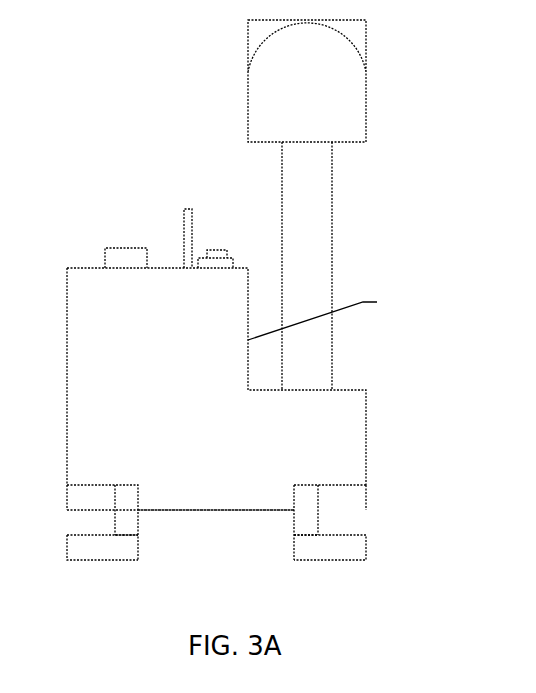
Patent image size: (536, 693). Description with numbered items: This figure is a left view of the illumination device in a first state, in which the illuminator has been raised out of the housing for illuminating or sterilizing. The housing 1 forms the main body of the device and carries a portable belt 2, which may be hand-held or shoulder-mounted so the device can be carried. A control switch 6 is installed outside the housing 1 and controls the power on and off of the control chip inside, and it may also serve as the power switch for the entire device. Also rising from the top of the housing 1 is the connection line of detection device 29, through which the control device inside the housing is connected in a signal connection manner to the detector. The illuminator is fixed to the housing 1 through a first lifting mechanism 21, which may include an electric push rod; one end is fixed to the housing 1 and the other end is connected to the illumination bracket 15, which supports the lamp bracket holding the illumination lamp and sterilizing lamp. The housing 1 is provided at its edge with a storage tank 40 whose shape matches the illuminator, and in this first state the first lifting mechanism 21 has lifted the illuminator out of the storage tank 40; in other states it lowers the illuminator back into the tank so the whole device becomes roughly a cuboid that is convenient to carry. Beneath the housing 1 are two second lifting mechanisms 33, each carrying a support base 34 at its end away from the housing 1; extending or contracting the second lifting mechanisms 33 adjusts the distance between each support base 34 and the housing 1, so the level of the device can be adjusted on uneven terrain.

The housing 1 is at (325, 423).
The portable belt 2 is at (213, 247).
The control switch 6 is at (125, 257).
The illumination bracket 15 is at (330, 88).
The first lifting mechanism 21 is at (318, 268).
The connection line of detection device 29 is at (189, 222).
The second lifting mechanism 33 is at (310, 518).
The support base 34 is at (320, 555).
The storage tank 40 is at (326, 318).